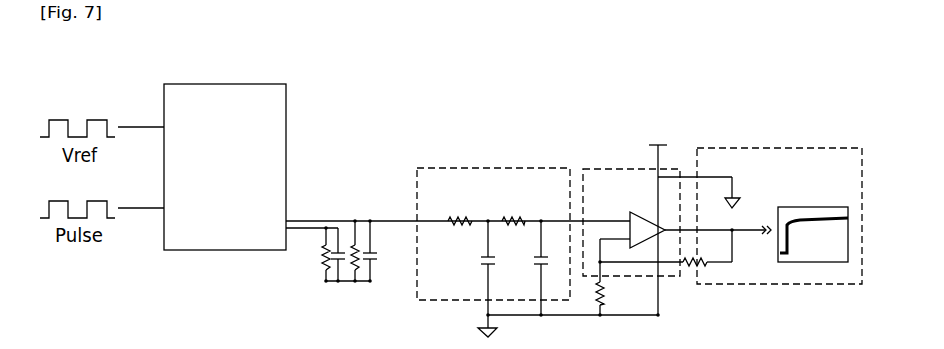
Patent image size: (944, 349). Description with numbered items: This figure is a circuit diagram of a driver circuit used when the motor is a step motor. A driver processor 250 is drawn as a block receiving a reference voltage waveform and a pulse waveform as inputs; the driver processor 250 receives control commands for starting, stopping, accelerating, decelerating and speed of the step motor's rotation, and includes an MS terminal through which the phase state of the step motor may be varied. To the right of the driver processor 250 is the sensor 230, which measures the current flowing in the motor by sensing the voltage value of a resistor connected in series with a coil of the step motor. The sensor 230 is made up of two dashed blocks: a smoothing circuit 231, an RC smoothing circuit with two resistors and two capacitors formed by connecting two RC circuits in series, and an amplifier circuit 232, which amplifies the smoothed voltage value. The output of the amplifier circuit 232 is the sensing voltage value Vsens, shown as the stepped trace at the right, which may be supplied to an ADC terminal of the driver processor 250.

The driver processor 250 is at (225, 83).
The sensor 230 is at (639, 193).
The smoothing circuit 231 is at (435, 168).
The amplifier circuit 232 is at (601, 168).